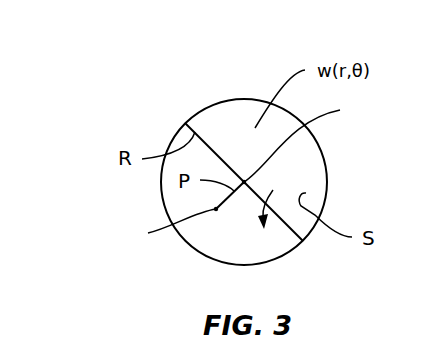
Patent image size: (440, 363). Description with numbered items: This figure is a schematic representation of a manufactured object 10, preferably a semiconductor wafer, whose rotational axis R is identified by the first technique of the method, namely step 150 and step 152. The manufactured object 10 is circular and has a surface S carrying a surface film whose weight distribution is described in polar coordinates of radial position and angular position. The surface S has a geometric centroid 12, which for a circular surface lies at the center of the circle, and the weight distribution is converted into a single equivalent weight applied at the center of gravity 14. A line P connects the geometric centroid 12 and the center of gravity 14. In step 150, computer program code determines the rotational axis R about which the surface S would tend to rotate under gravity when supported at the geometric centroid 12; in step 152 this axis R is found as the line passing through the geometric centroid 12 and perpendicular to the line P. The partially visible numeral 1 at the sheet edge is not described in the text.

The step 150 is at (186, 147).
The step 152 is at (179, 57).
The manufactured object 10 is at (219, 147).
The geometric centroid 12 is at (307, 140).
The center of gravity 14 is at (164, 226).
The partial numeral 1 is at (434, 40).